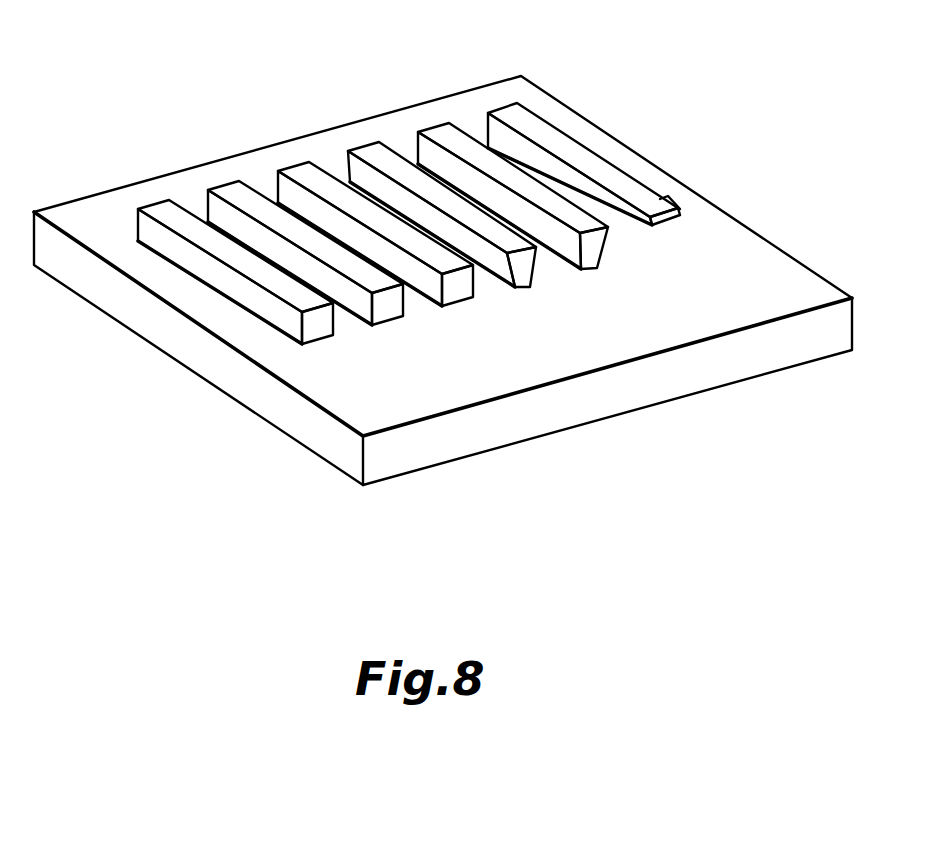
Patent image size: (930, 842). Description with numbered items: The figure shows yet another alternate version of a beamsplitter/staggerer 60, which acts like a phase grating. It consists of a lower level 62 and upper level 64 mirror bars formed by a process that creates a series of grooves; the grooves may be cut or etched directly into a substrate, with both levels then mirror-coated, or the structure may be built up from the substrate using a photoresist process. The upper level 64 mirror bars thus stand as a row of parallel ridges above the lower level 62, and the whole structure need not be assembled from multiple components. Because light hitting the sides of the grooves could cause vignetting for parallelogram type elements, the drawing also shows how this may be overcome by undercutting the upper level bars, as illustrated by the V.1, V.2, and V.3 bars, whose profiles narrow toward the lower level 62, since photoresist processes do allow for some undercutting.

The beamsplitter/staggerer 60 is at (656, 132).
The lower level 62 is at (570, 358).
The upper level mirror bars 64 is at (453, 297).
The undercut upper level bar V.1 is at (348, 152).
The undercut upper level bar V.2 is at (430, 130).
The undercut upper level bar V.3 is at (507, 113).